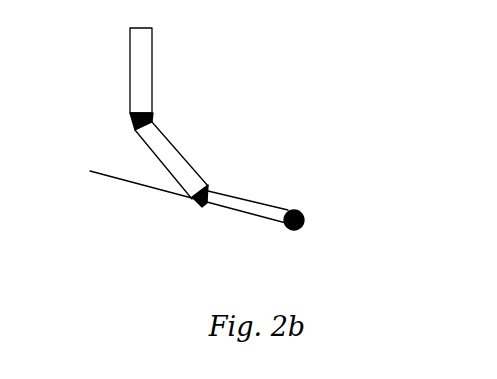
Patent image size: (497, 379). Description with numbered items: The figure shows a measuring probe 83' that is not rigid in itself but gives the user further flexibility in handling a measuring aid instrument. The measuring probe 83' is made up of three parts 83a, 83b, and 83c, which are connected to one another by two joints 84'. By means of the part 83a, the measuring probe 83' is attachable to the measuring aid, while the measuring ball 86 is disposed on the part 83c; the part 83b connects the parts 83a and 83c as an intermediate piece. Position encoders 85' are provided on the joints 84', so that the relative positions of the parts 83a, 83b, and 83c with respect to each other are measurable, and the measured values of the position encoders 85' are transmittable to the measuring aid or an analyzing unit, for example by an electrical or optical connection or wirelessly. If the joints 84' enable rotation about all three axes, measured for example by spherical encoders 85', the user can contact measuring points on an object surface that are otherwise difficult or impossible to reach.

The measuring probe 83' is at (296, 60).
The part 83a is at (175, 70).
The part 83b is at (204, 150).
The part 83c is at (189, 211).
The joint 84' is at (231, 160).
The position encoder 85' is at (100, 143).
The measuring ball 86 is at (304, 222).